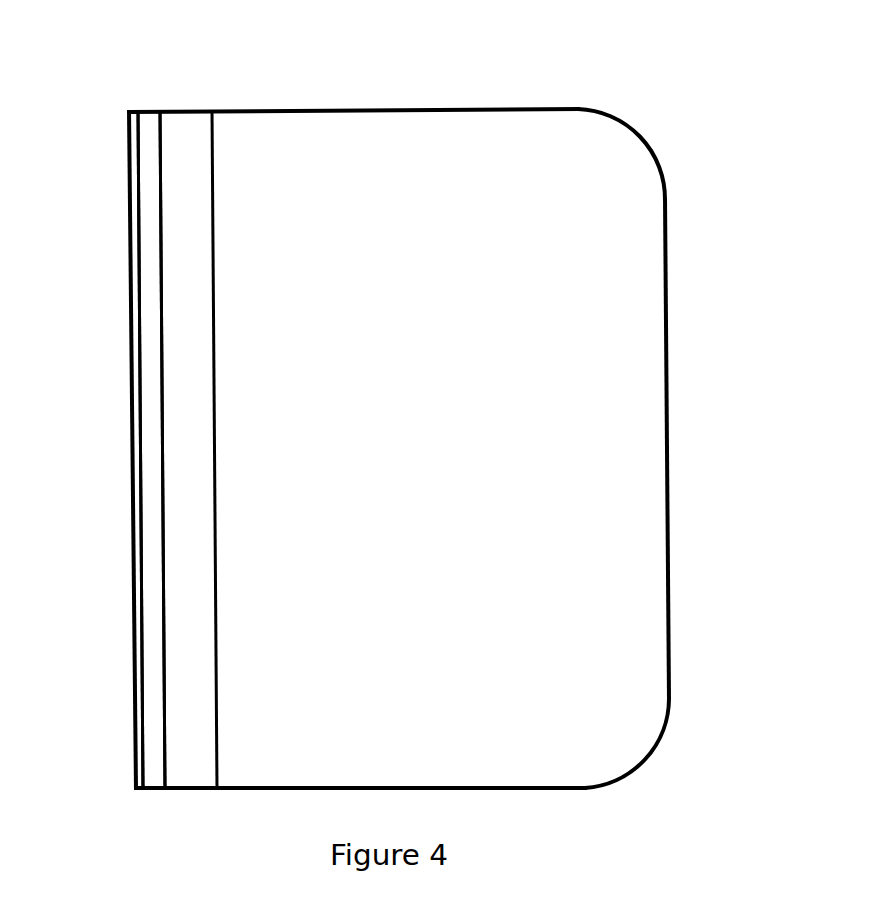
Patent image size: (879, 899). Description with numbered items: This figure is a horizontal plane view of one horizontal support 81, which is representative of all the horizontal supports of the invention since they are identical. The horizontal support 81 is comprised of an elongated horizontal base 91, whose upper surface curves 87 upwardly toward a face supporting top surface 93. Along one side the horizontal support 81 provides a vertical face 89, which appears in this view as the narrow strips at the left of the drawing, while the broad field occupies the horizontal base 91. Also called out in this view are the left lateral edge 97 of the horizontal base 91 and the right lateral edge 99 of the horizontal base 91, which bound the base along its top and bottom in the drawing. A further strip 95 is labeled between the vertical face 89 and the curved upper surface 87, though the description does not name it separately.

The horizontal support 81 is at (730, 246).
The upper surface curves 87 is at (200, 111).
The vertical face 89 is at (130, 213).
The horizontal base 91 is at (412, 456).
The face supporting top surface 93 is at (666, 410).
The inner strip 95 is at (144, 111).
The left lateral edge 97 is at (560, 109).
The right lateral edge 99 is at (508, 788).